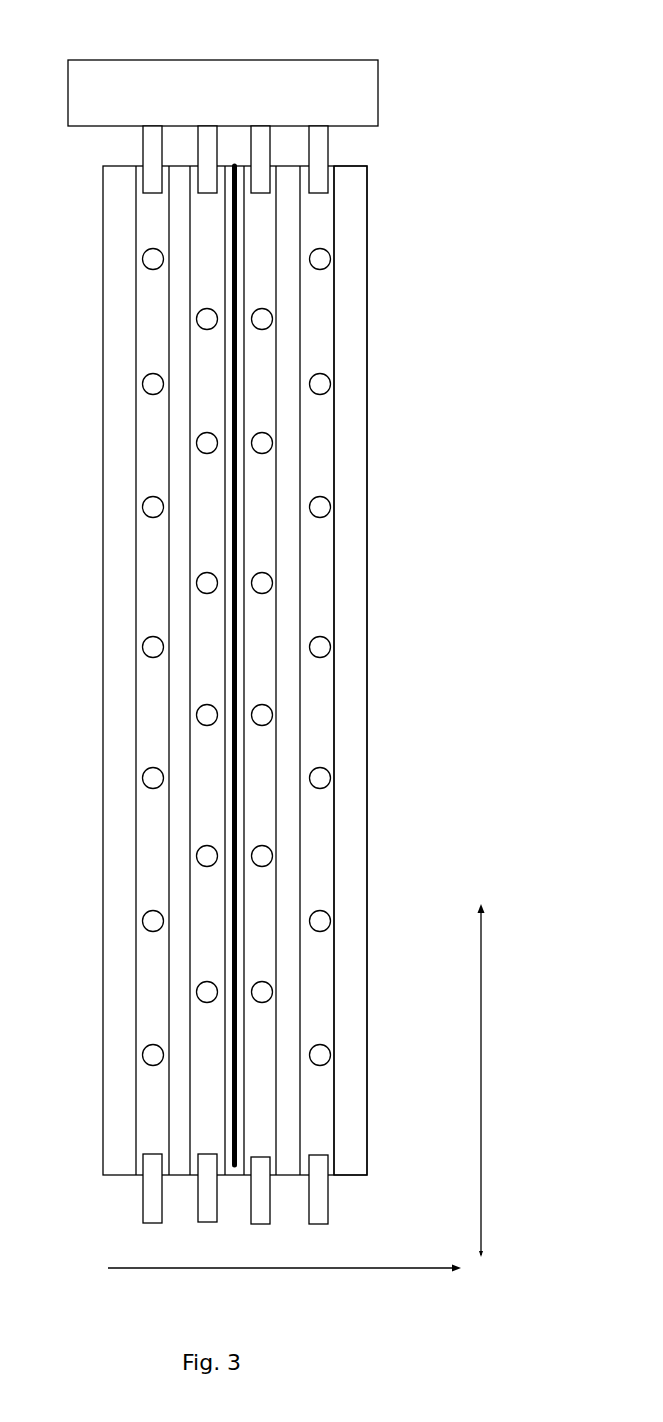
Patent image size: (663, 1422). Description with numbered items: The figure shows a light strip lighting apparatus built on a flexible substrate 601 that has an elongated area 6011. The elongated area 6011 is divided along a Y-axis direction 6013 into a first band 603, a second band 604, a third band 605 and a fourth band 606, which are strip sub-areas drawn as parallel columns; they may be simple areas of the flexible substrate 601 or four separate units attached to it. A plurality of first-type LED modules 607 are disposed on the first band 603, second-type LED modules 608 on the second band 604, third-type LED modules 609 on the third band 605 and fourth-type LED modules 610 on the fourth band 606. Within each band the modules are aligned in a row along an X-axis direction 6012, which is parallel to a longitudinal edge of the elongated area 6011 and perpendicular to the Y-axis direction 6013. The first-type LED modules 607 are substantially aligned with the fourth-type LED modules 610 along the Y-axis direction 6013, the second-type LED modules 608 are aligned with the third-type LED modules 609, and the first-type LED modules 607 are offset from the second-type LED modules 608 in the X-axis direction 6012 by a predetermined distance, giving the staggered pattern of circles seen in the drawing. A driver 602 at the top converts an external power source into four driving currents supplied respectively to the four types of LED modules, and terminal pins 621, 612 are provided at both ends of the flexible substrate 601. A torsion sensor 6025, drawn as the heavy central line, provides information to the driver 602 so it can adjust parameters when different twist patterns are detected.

The flexible substrate 601 is at (113, 229).
The elongated area 6011 is at (352, 202).
The X-axis direction 6012 is at (481, 1163).
The Y-axis direction 6013 is at (392, 1270).
The driver 602 is at (93, 71).
The torsion sensor 6025 is at (237, 165).
The terminal pins 621 is at (150, 153).
The first band 603 is at (148, 286).
The second band 604 is at (198, 353).
The third band 605 is at (266, 357).
The fourth band 606 is at (320, 287).
The first-type LED modules 607 is at (148, 514).
The second-type LED modules 608 is at (198, 589).
The third-type LED modules 609 is at (270, 585).
The fourth-type LED modules 610 is at (325, 515).
The terminal pins 612 is at (153, 1197).